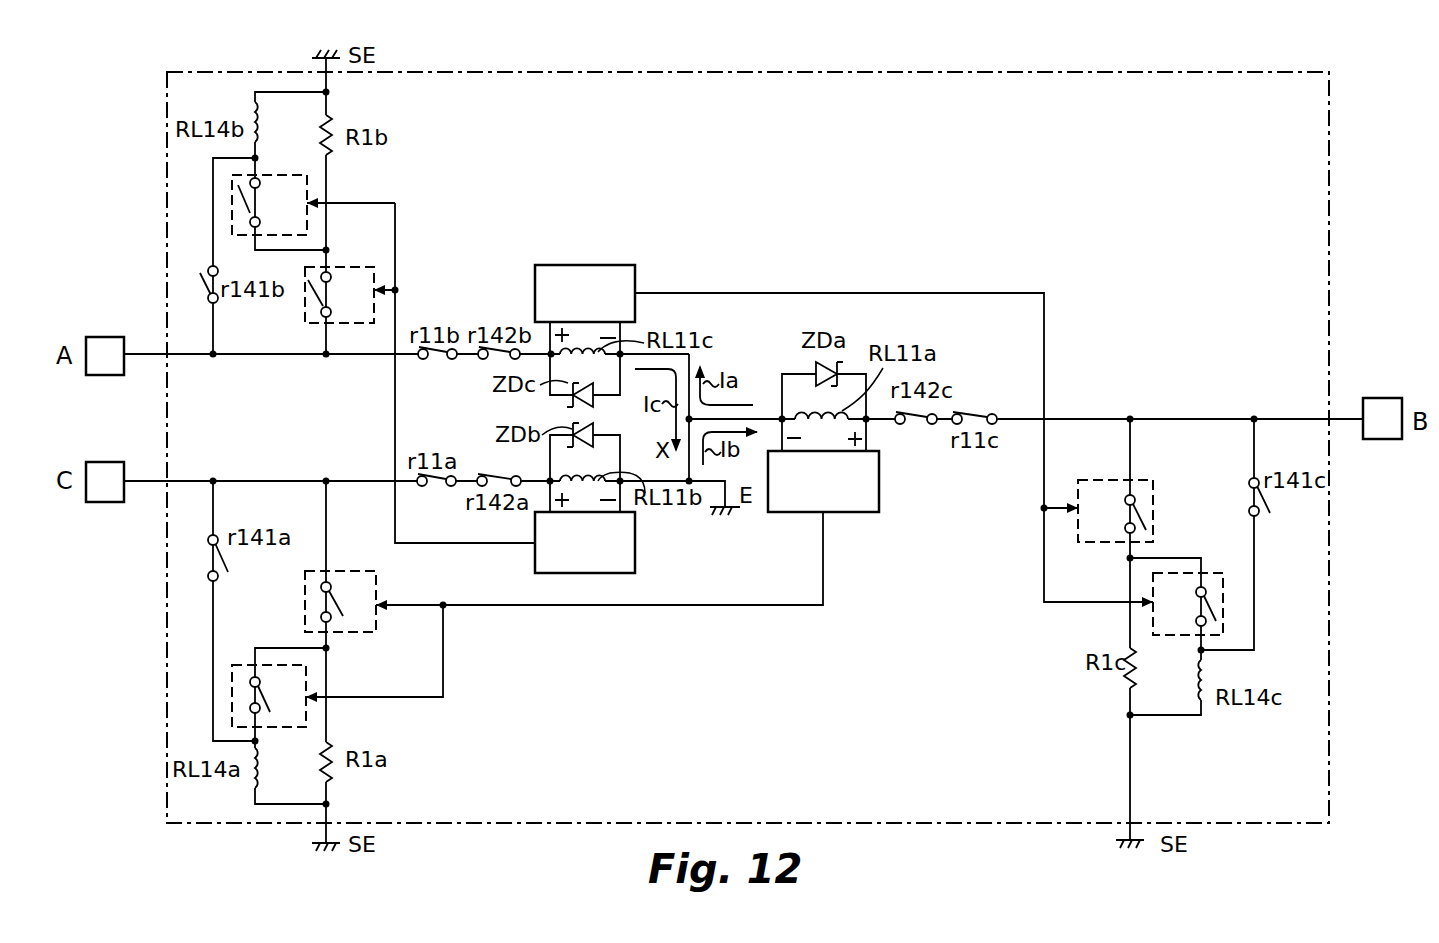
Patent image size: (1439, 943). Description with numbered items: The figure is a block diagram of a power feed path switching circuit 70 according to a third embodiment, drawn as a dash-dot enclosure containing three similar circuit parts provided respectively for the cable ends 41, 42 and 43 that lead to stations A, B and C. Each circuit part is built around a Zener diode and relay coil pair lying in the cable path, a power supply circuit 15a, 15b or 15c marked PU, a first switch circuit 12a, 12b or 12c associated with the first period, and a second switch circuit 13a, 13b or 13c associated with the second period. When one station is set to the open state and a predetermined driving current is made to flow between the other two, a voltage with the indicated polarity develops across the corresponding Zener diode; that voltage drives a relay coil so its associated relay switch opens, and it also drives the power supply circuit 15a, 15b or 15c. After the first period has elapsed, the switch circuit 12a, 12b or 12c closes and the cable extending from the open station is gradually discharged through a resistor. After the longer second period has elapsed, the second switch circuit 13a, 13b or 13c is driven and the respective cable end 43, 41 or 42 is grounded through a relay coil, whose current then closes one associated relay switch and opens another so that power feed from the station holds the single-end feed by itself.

The power feed path switching circuit 70 is at (1172, 72).
The cable end 41 is at (96, 337).
The cable end 42 is at (1390, 398).
The cable end 43 is at (96, 462).
The switch circuit 12a is at (379, 591).
The switch circuit 12b is at (346, 267).
The switch circuit 12c is at (1156, 486).
The second switch circuit 13a is at (242, 662).
The second switch circuit 13b is at (290, 175).
The second switch circuit 13c is at (1226, 583).
The power supply circuit 15a is at (879, 490).
The power supply circuit 15b is at (635, 556).
The power supply circuit 15c is at (613, 265).